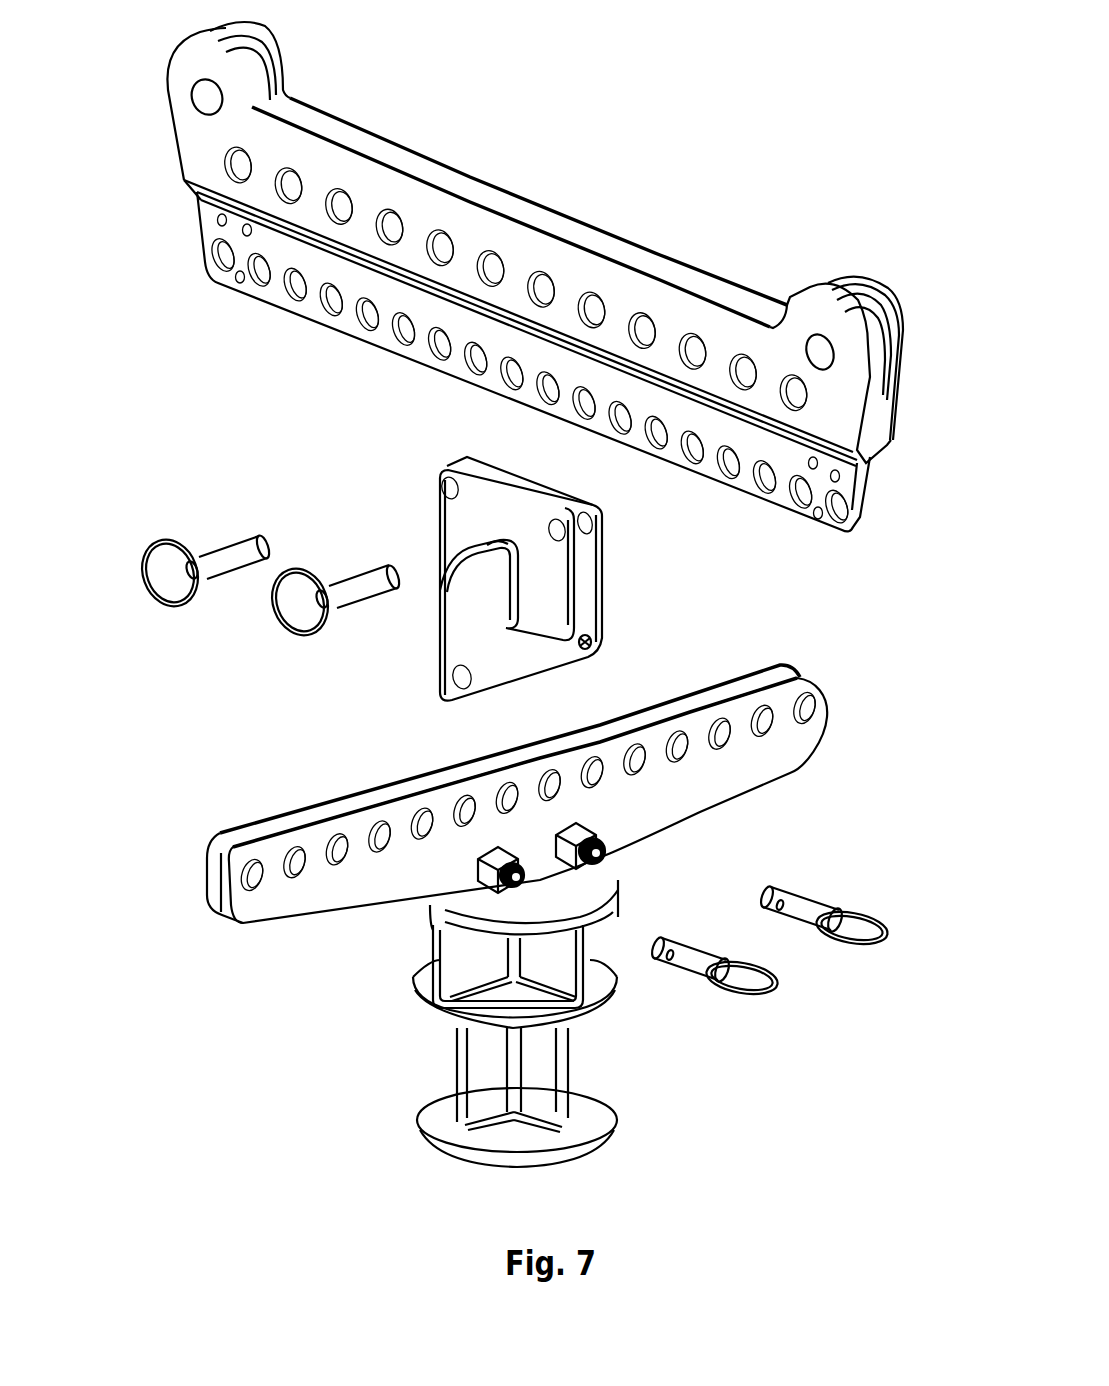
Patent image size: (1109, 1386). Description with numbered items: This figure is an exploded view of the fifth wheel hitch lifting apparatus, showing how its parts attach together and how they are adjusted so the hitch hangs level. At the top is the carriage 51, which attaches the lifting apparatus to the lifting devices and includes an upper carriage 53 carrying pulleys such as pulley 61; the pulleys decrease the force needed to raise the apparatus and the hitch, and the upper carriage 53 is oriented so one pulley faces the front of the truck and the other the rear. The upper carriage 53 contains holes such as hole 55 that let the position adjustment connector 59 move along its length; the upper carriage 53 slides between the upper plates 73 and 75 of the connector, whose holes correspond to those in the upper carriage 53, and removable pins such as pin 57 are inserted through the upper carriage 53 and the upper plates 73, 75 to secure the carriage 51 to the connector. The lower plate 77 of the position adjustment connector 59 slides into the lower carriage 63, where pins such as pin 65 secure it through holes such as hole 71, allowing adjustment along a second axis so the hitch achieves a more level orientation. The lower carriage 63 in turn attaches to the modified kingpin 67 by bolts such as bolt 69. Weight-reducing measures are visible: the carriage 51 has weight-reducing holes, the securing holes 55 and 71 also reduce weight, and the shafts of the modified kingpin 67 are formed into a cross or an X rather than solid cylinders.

The carriage 51 is at (527, 276).
The upper carriage 53 is at (213, 228).
The hole 55 is at (267, 288).
The pin 57 is at (192, 573).
The position adjustment connector 59 is at (547, 583).
The pulley 61 is at (885, 322).
The lower carriage 63 is at (550, 857).
The pin 65 is at (703, 983).
The modified kingpin 67 is at (447, 1017).
The bolt 69 is at (607, 850).
The hole 71 is at (773, 723).
The upper plate 73 is at (605, 605).
The upper plate 75 is at (610, 647).
The lower plate 77 is at (520, 670).